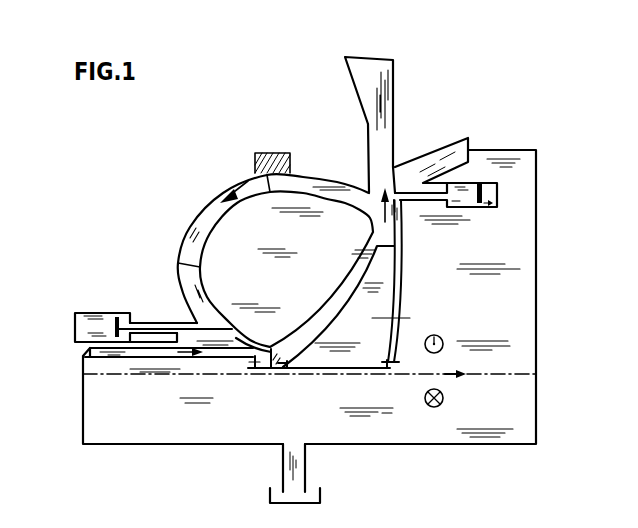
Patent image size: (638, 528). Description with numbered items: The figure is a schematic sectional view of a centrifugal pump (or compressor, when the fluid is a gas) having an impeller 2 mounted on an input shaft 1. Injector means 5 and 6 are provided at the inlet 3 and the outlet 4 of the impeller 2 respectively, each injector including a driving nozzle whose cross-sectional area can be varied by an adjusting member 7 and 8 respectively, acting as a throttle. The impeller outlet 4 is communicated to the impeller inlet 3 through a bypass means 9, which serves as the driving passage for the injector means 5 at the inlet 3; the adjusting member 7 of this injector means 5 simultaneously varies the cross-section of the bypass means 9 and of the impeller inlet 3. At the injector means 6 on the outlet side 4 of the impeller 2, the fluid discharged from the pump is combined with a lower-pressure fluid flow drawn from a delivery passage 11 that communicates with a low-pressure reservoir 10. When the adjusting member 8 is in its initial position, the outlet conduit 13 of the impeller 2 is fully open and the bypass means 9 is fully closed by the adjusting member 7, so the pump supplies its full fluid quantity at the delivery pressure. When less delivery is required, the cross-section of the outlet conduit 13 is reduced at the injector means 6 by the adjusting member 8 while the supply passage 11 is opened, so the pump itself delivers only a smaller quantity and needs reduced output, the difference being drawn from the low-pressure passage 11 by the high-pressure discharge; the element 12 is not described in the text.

The input shaft 1 is at (503, 378).
The impeller 2 is at (372, 317).
The inlet 3 is at (281, 358).
The outlet 4 is at (400, 245).
The injector means 5 is at (163, 309).
The injector means 6 is at (378, 178).
The adjusting member 7 is at (218, 320).
The adjusting member 8 is at (396, 185).
The bypass means 9 is at (210, 212).
The low-pressure reservoir 10 is at (313, 488).
The delivery passage 11 is at (452, 155).
The return channel 12 is at (108, 352).
The outlet conduit 13 is at (383, 76).